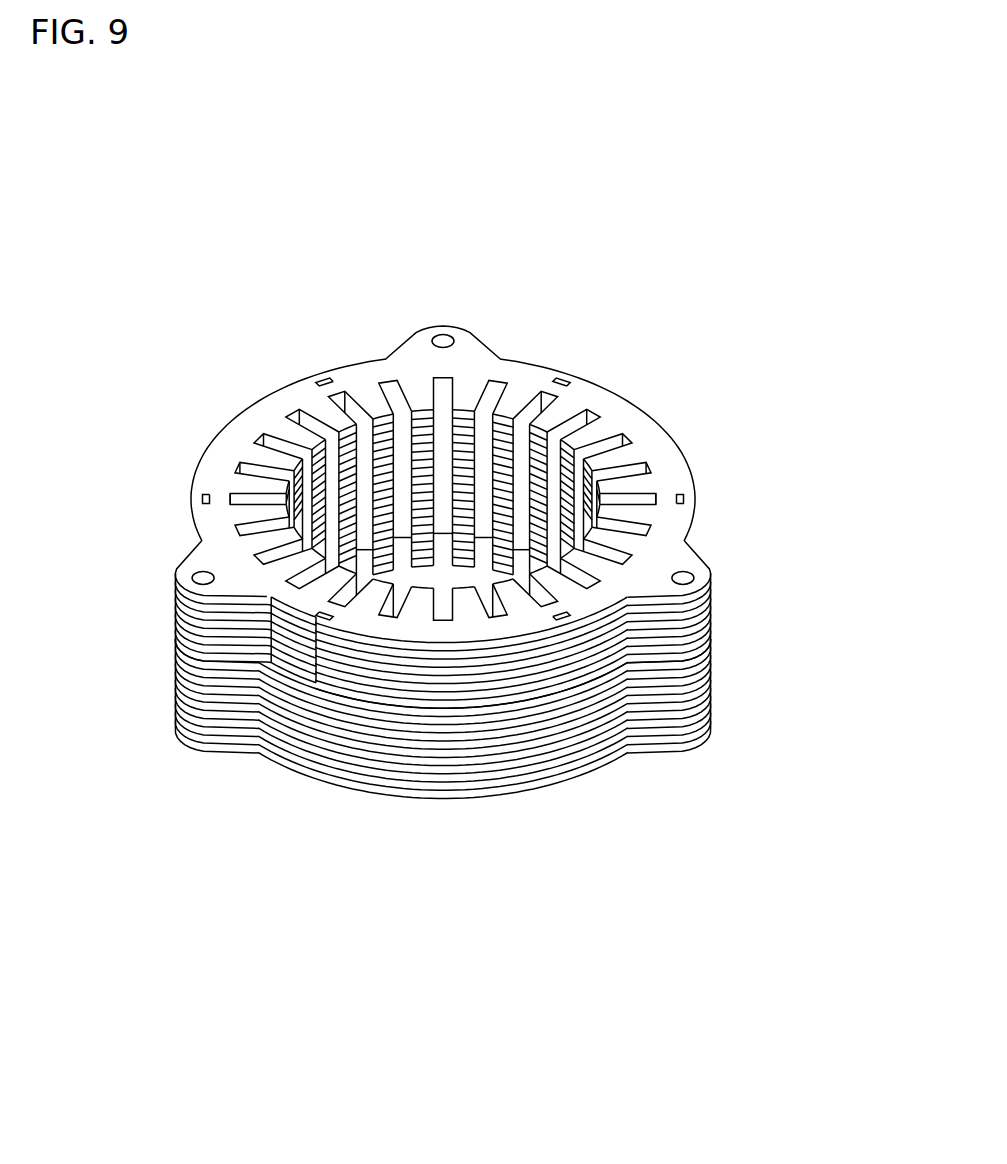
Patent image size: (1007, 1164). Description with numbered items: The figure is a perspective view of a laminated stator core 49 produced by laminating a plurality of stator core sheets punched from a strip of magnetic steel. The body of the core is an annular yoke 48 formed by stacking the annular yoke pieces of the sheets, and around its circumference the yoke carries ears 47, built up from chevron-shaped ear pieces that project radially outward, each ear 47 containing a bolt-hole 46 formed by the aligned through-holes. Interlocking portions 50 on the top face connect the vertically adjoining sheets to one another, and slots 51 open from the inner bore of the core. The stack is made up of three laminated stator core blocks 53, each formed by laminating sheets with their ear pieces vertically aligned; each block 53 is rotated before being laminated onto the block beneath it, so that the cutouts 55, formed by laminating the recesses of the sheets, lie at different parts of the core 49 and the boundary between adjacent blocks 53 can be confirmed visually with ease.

The bolt-hole 46 is at (443, 346).
The ear 47 is at (436, 323).
The annular yoke 48 is at (609, 410).
The laminated stator core 49 is at (583, 244).
The interlocking portion 50 is at (561, 379).
The slot 51 is at (493, 386).
The laminated stator core block 53 is at (525, 634).
The cutout 55 is at (318, 653).